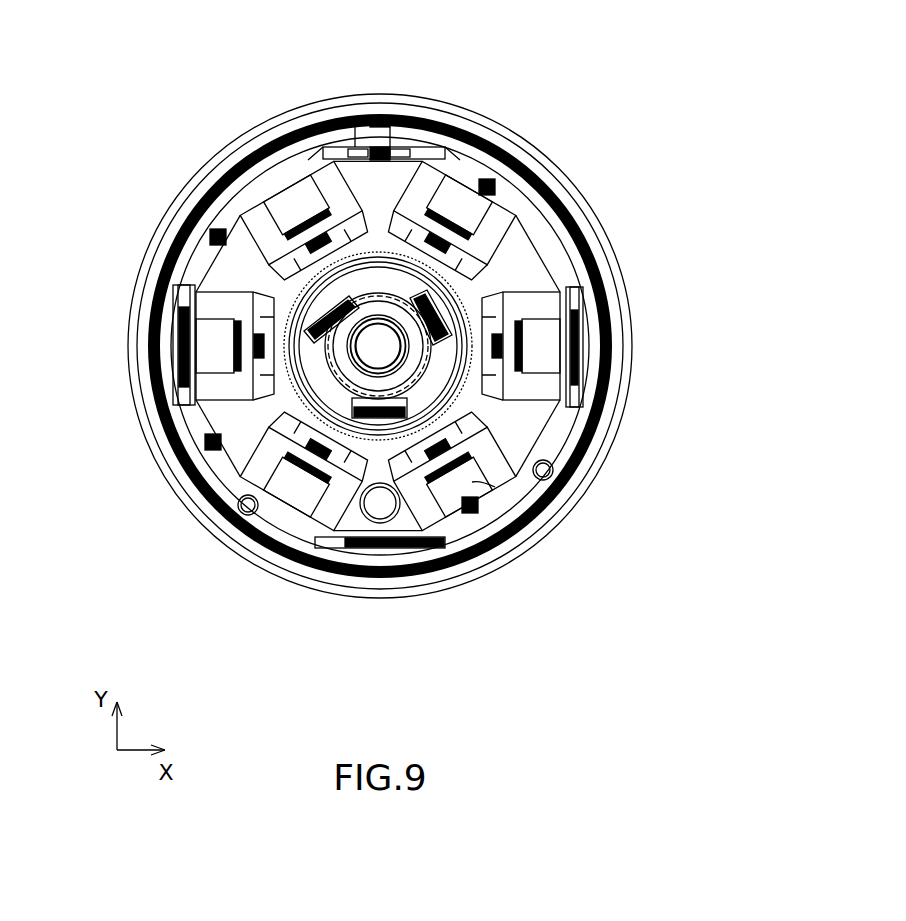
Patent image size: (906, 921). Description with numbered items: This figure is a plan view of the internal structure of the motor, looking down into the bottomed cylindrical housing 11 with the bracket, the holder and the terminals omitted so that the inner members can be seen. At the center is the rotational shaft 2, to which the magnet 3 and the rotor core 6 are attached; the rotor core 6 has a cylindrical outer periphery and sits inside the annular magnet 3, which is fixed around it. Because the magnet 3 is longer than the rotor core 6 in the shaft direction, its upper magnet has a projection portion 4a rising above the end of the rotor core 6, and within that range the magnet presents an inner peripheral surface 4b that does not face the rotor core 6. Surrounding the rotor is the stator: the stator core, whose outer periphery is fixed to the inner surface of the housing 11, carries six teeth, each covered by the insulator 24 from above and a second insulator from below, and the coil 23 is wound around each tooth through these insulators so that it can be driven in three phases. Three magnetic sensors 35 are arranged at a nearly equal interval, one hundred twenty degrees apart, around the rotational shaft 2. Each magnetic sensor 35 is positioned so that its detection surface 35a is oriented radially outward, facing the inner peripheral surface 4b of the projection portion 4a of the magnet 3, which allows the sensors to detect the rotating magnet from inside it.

The rotational shaft 2 is at (452, 386).
The magnet 3 is at (379, 417).
The projection portion 4a is at (348, 442).
The inner peripheral surface 4b is at (328, 410).
The rotor core 6 is at (377, 355).
The housing 11 is at (276, 126).
The coil 23 is at (488, 430).
The insulator 24 is at (433, 483).
The magnetic sensor 35 is at (552, 340).
The detection surface 35a is at (462, 422).